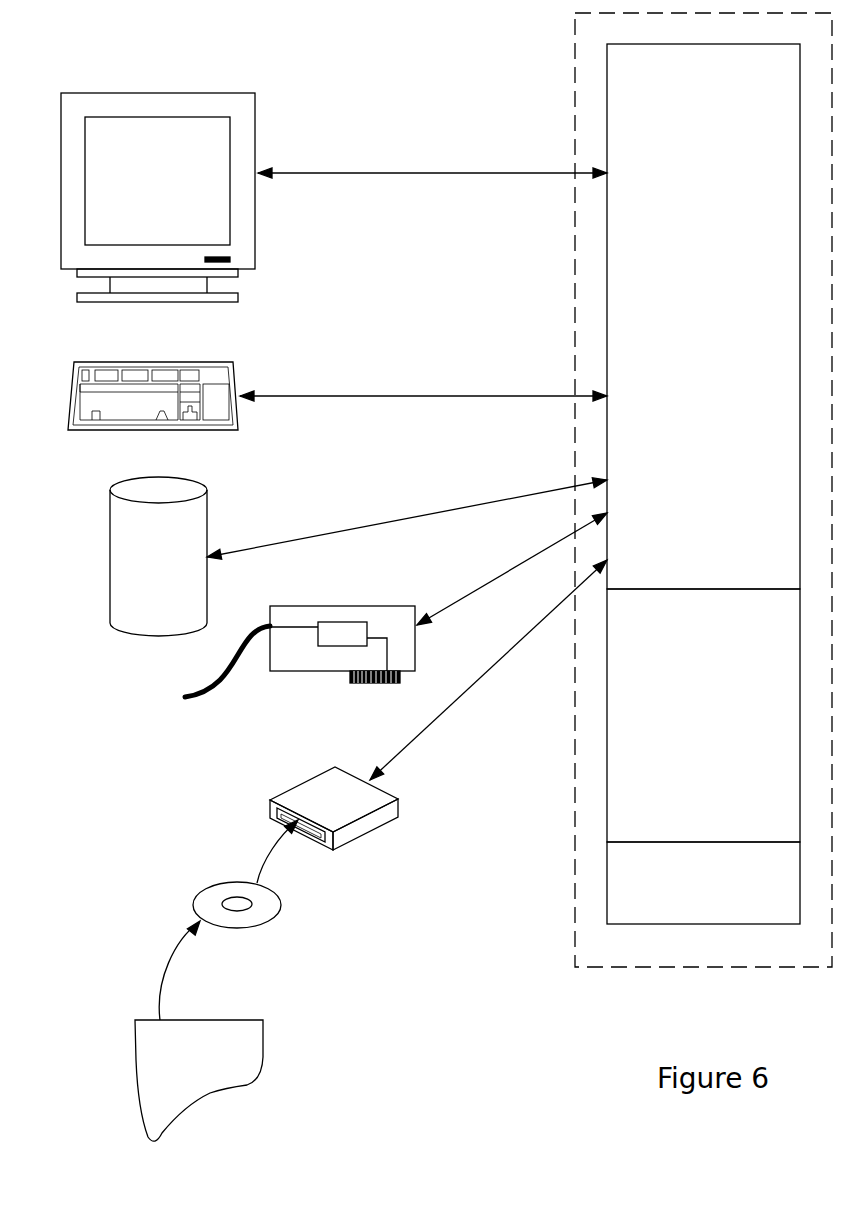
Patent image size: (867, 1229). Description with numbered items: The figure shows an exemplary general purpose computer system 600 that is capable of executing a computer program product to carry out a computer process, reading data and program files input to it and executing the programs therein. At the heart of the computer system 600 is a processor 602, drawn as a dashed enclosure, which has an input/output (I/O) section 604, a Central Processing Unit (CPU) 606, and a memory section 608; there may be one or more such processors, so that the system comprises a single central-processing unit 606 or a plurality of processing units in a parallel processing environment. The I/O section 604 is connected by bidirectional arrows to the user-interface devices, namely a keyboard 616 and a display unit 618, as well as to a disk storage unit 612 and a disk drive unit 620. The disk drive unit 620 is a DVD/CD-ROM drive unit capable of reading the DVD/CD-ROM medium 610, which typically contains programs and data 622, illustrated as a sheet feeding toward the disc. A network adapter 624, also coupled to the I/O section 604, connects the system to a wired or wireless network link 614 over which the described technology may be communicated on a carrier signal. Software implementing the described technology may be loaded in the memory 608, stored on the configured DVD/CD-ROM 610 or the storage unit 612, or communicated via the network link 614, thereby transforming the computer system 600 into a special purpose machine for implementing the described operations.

The general purpose computer system 600 is at (482, 990).
The processor 602 is at (575, 78).
The input/output (I/O) section 604 is at (703, 316).
The Central Processing Unit (CPU) 606 is at (703, 715).
The memory section 608 is at (703, 883).
The DVD/CD-ROM medium 610 is at (207, 886).
The disk storage unit 612 is at (108, 509).
The network link 614 is at (210, 697).
The keyboard 616 is at (113, 361).
The display unit 618 is at (125, 92).
The disk drive unit 620 is at (318, 798).
The programs and data 622 is at (265, 1042).
The network adapter 624 is at (315, 668).